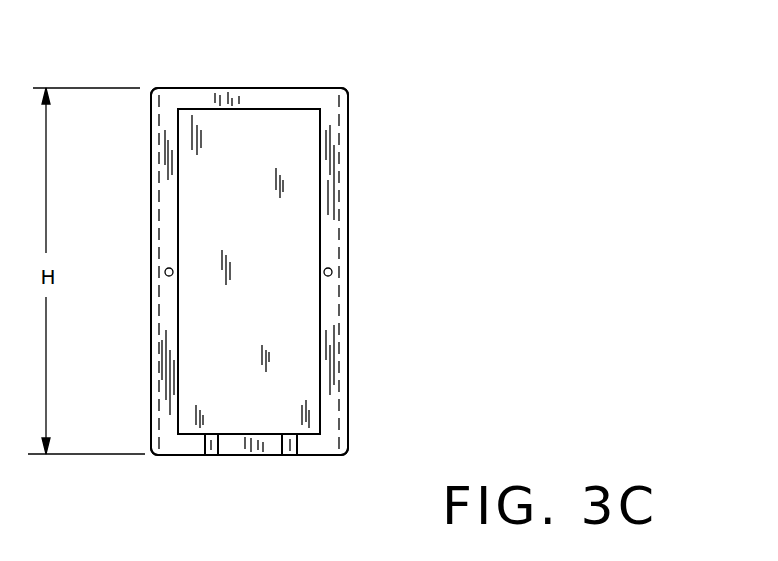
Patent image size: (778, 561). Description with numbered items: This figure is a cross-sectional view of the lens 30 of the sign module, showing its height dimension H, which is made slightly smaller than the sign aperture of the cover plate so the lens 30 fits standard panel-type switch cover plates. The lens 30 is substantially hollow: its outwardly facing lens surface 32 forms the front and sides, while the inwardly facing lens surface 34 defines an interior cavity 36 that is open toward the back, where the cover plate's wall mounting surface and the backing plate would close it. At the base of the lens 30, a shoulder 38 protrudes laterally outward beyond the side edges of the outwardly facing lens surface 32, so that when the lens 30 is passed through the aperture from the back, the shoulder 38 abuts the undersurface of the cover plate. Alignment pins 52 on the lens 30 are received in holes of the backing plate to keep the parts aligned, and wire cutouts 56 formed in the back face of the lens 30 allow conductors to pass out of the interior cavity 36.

The lens 30 is at (388, 251).
The outwardly facing lens surface 32 is at (341, 343).
The inwardly facing lens surface 34 is at (230, 135).
The interior cavity 36 is at (294, 188).
The shoulder 38 is at (153, 204).
The alignment pins 52 is at (165, 273).
The wire cutouts 56 is at (216, 464).